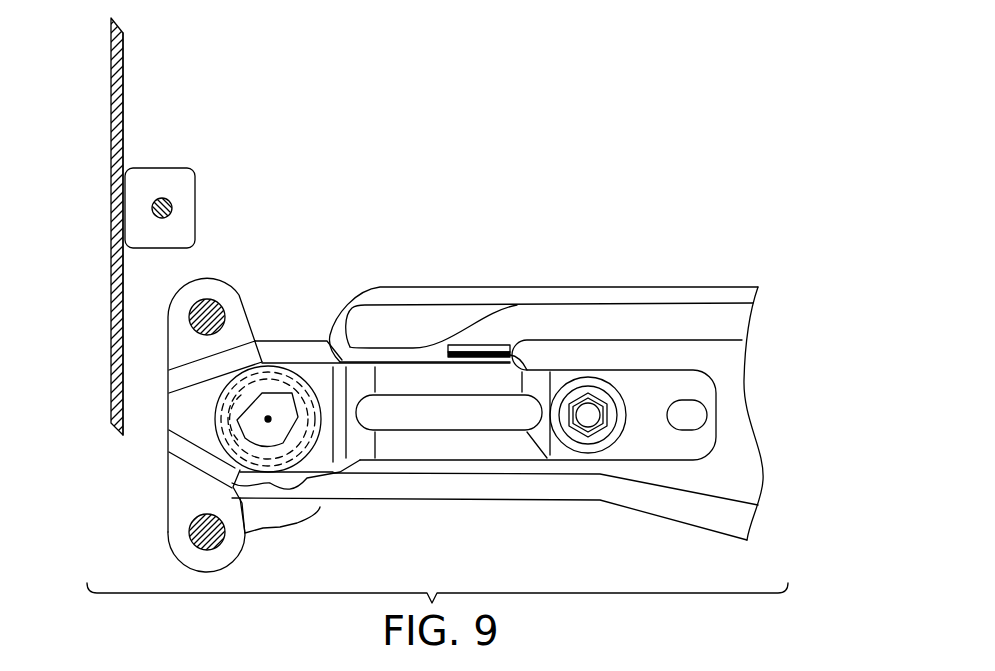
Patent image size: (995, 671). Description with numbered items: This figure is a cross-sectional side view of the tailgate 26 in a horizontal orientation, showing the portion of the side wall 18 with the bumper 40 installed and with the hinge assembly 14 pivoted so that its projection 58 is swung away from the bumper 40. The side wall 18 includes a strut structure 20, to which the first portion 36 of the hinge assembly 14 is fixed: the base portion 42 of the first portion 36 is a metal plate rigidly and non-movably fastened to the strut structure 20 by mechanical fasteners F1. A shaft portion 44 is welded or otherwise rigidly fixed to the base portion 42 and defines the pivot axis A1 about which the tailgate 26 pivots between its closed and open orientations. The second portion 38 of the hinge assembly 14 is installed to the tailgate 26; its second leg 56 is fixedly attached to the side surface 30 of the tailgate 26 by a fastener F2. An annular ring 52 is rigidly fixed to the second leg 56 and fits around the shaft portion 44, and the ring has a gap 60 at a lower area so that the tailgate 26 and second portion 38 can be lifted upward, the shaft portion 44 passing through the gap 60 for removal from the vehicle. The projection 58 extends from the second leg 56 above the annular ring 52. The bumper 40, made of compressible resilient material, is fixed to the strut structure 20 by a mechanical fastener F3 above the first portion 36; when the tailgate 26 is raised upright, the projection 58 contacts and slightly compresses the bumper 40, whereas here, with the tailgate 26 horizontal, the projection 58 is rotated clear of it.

The side wall 18 is at (108, 60).
The strut structure 20 is at (110, 118).
The bumper 40 is at (140, 188).
The mechanical fastener F3 is at (160, 219).
The mechanical fasteners F1 is at (212, 302).
The first portion 36 is at (165, 405).
The hinge assembly 14 is at (165, 440).
The base portion 42 is at (185, 500).
The gap 60 is at (232, 408).
The annular ring 52 is at (302, 378).
The shaft portion 44 is at (265, 433).
The pivot axis A1 is at (268, 419).
The tailgate 26 is at (392, 313).
The projection 58 is at (485, 345).
The second portion 38 is at (635, 362).
The second leg 56 is at (566, 380).
The mechanical fastener F2 is at (588, 420).
The side surface 30 is at (723, 475).